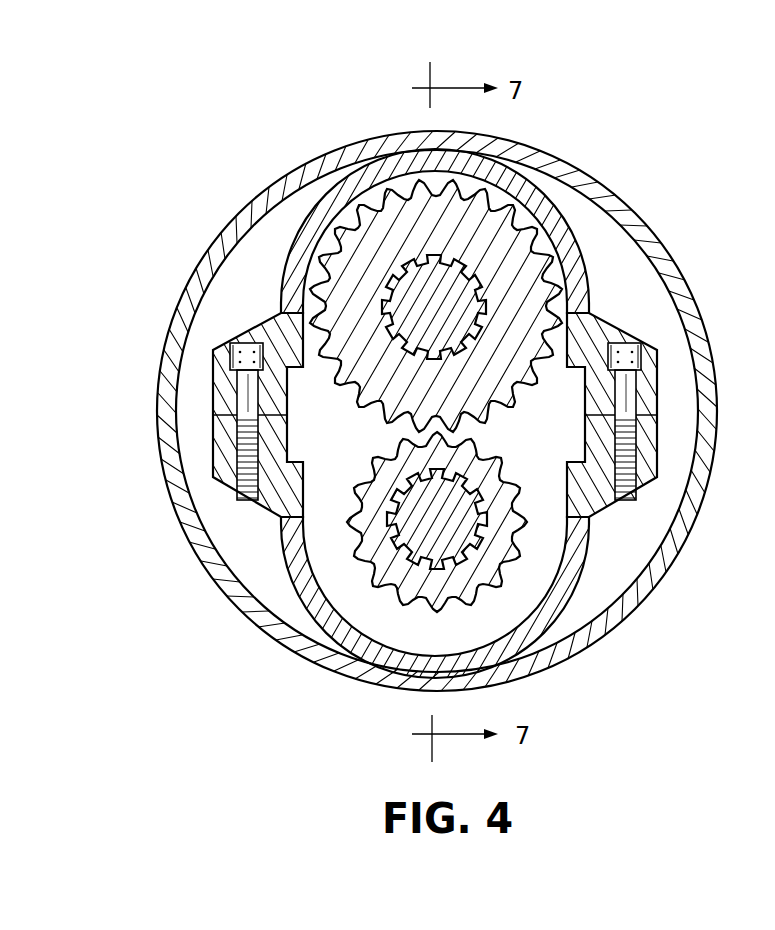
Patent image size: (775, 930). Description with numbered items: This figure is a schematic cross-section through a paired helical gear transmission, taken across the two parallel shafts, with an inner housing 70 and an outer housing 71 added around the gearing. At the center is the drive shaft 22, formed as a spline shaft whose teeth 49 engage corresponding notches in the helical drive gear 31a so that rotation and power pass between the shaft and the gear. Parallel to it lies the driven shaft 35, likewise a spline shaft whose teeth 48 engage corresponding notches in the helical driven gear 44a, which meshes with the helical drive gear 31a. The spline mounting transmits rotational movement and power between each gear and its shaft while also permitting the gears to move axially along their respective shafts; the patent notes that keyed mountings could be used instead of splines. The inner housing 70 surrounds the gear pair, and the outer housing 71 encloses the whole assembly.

The outer housing 71 is at (665, 253).
The inner housing 70 is at (580, 257).
The helical drive gear 31a is at (497, 220).
The drive shaft 22 is at (433, 313).
The teeth 49 is at (398, 293).
The helical driven gear 44a is at (400, 580).
The teeth 48 is at (425, 486).
The driven shaft 35 is at (440, 513).